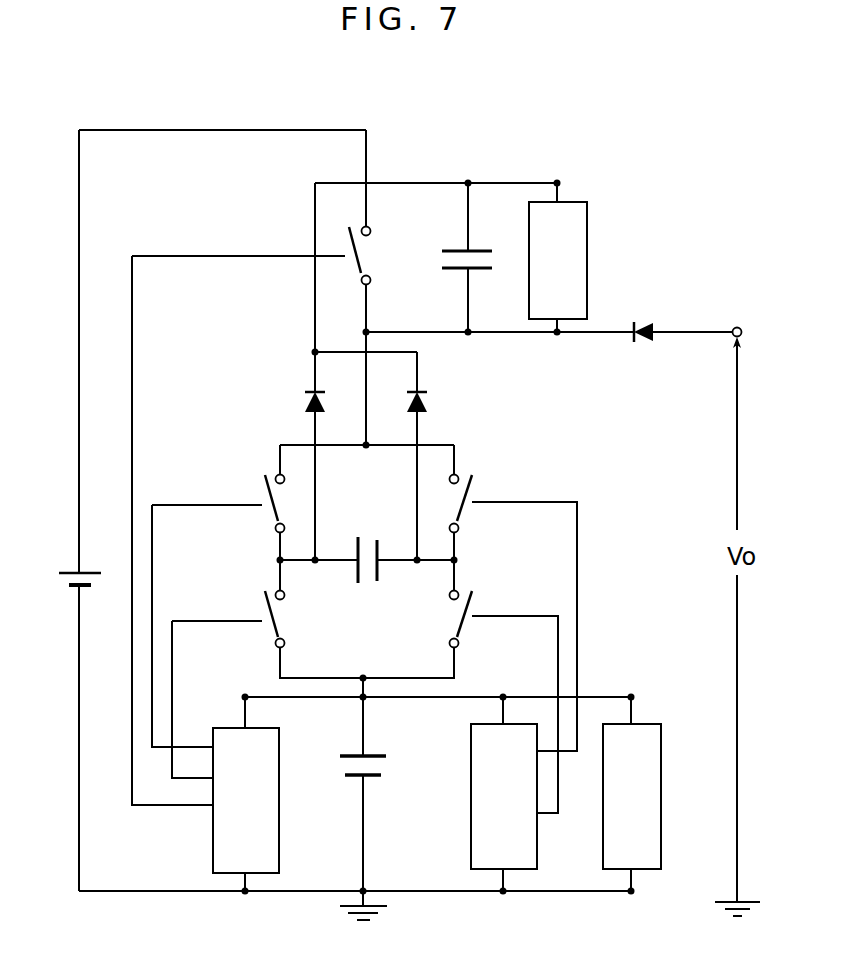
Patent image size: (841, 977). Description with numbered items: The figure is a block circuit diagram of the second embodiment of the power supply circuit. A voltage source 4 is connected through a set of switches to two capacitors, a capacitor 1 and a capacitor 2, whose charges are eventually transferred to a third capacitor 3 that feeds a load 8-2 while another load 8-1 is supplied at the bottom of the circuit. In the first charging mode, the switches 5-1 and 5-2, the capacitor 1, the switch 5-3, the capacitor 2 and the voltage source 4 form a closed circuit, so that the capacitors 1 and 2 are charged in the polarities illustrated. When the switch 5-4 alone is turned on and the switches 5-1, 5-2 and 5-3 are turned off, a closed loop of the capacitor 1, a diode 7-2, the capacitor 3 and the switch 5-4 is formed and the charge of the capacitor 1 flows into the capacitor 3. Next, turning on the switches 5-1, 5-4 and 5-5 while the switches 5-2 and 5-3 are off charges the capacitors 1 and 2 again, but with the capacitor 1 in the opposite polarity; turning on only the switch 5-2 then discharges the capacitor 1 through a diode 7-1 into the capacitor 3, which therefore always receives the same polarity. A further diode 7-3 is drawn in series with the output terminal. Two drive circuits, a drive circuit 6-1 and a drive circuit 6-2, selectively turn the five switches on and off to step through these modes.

The capacitor 1 is at (370, 535).
The capacitor 2 is at (390, 770).
The capacitor 3 is at (494, 258).
The voltage source 4 is at (60, 580).
The switch 5-1 is at (372, 258).
The switch 5-2 is at (467, 487).
The switch 5-3 is at (260, 601).
The switch 5-4 is at (256, 485).
The switch 5-5 is at (474, 602).
The drive circuit 6-1 is at (280, 817).
The drive circuit 6-2 is at (471, 813).
The diode 7-1 is at (304, 401).
The diode 7-2 is at (430, 403).
The diode 7-3 is at (652, 318).
The load 8-1 is at (662, 814).
The load 8-2 is at (588, 250).